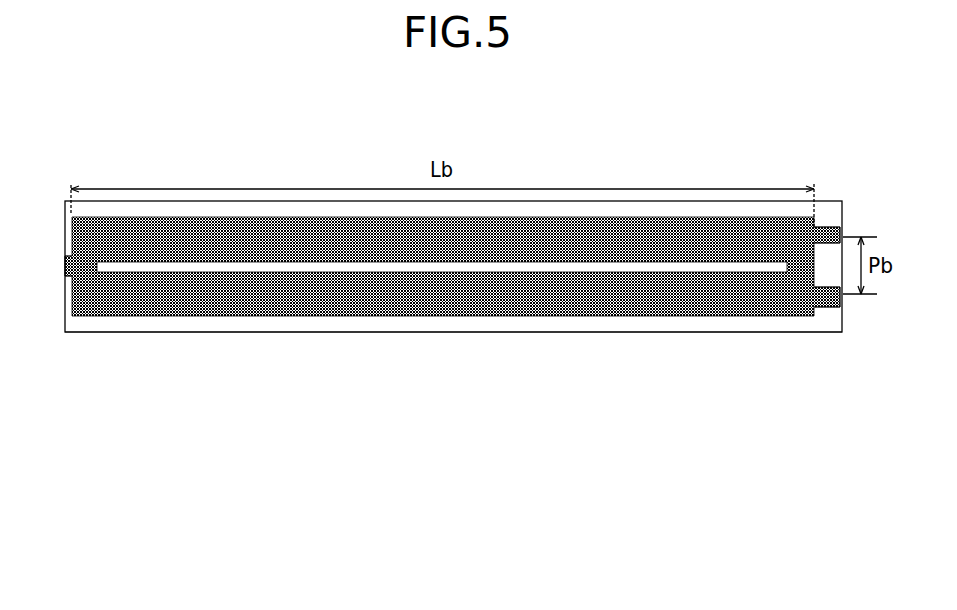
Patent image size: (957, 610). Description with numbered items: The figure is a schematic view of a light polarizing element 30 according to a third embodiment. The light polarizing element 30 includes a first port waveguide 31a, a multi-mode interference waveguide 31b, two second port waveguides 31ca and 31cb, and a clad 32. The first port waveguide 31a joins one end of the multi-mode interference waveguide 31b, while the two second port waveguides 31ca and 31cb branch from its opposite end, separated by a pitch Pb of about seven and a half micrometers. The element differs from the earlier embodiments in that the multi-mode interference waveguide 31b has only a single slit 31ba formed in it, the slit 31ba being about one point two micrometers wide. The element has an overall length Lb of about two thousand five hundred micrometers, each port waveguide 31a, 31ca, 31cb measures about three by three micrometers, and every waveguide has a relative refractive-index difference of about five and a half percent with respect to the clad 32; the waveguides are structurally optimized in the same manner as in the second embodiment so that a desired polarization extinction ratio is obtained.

The light polarizing element 30 is at (546, 150).
The first port waveguide 31a is at (65, 310).
The multi-mode interference waveguide 31b is at (423, 319).
The slit 31ba is at (508, 266).
The second port waveguide 31ca is at (823, 219).
The second port waveguide 31cb is at (828, 310).
The clad 32 is at (224, 323).